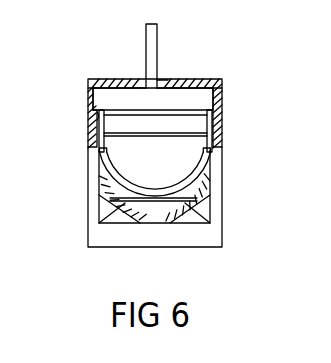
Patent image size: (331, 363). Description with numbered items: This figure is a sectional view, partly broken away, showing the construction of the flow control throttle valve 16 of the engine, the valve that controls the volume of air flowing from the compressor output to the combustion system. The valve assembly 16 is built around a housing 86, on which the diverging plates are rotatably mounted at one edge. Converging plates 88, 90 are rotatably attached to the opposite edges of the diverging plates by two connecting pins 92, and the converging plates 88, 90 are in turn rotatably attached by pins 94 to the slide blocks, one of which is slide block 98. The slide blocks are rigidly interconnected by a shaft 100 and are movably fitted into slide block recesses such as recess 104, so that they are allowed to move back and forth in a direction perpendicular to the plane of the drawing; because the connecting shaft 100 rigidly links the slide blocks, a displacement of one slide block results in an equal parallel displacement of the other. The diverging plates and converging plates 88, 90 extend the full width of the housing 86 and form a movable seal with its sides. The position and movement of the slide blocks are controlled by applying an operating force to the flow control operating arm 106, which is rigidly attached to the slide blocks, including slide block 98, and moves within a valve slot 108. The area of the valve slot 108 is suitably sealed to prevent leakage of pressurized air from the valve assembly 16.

The flow control throttle valve 16 is at (240, 184).
The housing 86 is at (90, 147).
The converging plate 88 is at (168, 210).
The converging plate 90 is at (198, 122).
The connecting pins 92 is at (167, 139).
The pins 94 is at (98, 117).
The slide block 98 is at (225, 80).
The shaft 100 is at (211, 140).
The slide block recess 104 is at (209, 97).
The flow control operating arm 106 is at (158, 32).
The valve slot 108 is at (167, 78).